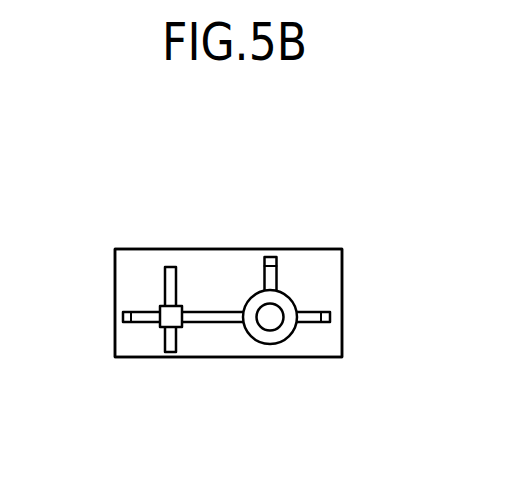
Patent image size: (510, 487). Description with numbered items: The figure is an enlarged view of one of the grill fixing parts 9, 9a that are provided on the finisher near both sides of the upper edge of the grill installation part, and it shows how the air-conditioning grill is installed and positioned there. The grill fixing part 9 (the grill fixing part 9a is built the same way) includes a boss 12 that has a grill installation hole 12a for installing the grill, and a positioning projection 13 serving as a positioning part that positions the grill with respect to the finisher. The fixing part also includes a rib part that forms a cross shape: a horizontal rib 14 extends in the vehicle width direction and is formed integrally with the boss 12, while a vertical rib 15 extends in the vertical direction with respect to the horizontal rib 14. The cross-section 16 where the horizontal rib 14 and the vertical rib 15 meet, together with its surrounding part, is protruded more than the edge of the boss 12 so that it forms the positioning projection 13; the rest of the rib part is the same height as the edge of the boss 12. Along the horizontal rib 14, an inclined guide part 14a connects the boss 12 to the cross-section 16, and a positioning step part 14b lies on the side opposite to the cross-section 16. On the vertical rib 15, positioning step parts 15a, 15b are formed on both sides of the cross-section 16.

The grill fixing part 9 is at (267, 236).
The grill fixing part 9a is at (228, 303).
The boss 12 is at (338, 325).
The grill installation hole 12a is at (272, 322).
The positioning projection 13 is at (149, 294).
The horizontal rib 14 is at (178, 346).
The inclined guide part 14a is at (220, 320).
The positioning step part 14b is at (155, 317).
The vertical rib 15 is at (195, 319).
The positioning step part 15a is at (171, 300).
The positioning step part 15b is at (177, 340).
The cross-section 16 is at (159, 333).